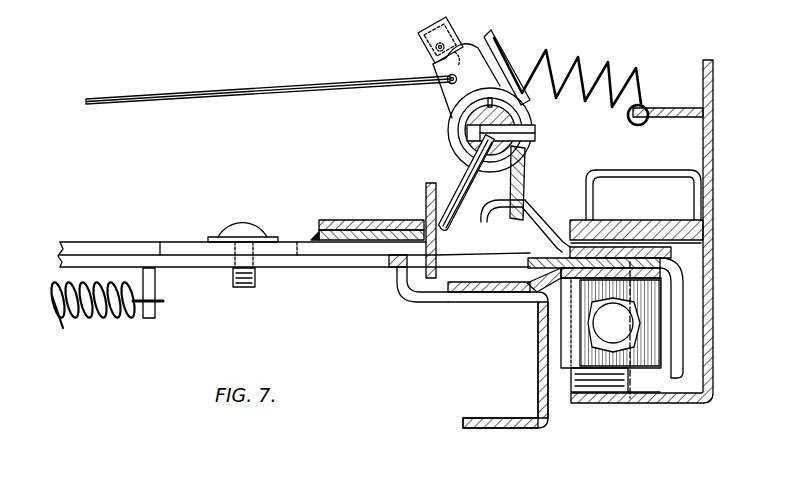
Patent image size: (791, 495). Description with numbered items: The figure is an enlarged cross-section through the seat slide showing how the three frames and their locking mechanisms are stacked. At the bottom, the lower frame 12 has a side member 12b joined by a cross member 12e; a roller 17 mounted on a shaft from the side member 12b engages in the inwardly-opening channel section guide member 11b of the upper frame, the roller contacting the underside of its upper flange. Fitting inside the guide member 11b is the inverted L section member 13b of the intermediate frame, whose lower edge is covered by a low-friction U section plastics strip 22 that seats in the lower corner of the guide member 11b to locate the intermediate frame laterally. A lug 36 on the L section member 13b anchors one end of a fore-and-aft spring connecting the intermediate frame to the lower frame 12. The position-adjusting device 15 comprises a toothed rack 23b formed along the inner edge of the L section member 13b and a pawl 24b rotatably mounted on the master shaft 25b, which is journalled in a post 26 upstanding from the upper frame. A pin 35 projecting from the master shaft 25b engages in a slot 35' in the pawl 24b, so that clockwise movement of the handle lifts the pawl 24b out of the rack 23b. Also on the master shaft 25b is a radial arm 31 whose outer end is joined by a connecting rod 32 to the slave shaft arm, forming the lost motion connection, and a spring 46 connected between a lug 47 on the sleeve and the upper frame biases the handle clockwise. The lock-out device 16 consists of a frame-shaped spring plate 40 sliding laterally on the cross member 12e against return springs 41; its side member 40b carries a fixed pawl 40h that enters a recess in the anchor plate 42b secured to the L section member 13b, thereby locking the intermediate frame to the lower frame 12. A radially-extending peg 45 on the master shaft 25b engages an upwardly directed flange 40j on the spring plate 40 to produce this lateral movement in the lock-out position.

The connecting rod 32 is at (281, 88).
The lug 47 is at (421, 33).
The radial arm 31 is at (447, 95).
The slot 35' is at (507, 60).
The spring 46 is at (558, 60).
The position-adjusting device 15 is at (641, 126).
The L section member 13b is at (666, 245).
The post 26 is at (531, 113).
The master shaft 25b is at (467, 142).
The peg 45 is at (461, 175).
The pin 35 is at (561, 179).
The pawl 24b is at (495, 223).
The toothed rack 23b is at (548, 212).
The upwardly directed flange 40j is at (375, 168).
The lock-out device 16 is at (390, 208).
The side member of spring plate 40b is at (332, 228).
The spring plate 40 is at (106, 249).
The return spring 41 is at (75, 322).
The fixed pawl 40h is at (432, 292).
The cross member 12e is at (396, 280).
The anchor plate 42b is at (530, 268).
The lower frame 12 is at (460, 415).
The side member 12b is at (527, 408).
The lug 36 is at (580, 357).
The roller 17 is at (600, 378).
The guide member 11b is at (631, 394).
The low-friction U section plastics strip 22 is at (666, 380).